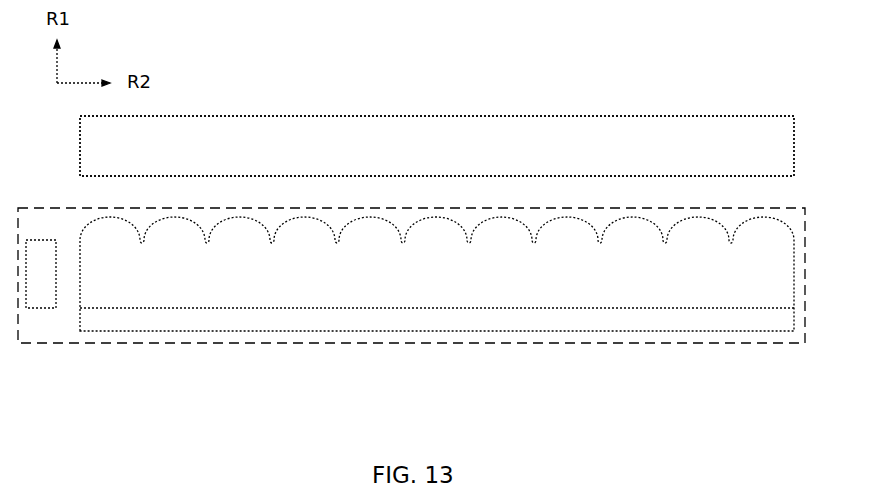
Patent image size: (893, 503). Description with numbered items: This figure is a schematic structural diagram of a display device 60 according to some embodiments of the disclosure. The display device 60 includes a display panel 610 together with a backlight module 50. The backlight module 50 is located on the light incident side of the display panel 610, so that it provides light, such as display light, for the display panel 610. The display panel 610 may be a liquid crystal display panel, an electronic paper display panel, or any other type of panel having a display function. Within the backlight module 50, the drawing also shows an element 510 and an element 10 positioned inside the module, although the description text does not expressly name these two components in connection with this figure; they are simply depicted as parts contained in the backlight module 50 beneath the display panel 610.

The display device 60 is at (773, 47).
The display panel 610 is at (80, 150).
The backlight module 50 is at (613, 343).
The light source 510 is at (40, 308).
The light guide plate 10 is at (234, 331).